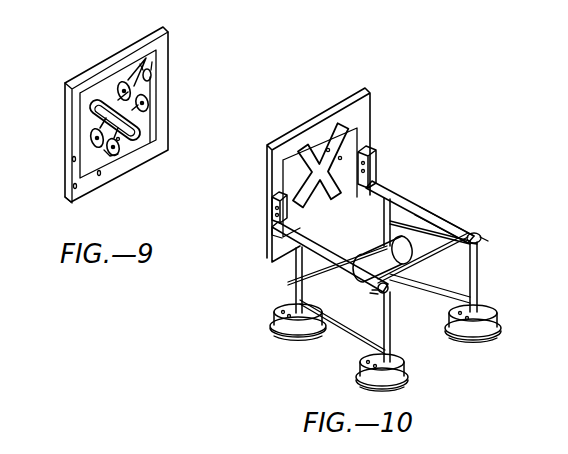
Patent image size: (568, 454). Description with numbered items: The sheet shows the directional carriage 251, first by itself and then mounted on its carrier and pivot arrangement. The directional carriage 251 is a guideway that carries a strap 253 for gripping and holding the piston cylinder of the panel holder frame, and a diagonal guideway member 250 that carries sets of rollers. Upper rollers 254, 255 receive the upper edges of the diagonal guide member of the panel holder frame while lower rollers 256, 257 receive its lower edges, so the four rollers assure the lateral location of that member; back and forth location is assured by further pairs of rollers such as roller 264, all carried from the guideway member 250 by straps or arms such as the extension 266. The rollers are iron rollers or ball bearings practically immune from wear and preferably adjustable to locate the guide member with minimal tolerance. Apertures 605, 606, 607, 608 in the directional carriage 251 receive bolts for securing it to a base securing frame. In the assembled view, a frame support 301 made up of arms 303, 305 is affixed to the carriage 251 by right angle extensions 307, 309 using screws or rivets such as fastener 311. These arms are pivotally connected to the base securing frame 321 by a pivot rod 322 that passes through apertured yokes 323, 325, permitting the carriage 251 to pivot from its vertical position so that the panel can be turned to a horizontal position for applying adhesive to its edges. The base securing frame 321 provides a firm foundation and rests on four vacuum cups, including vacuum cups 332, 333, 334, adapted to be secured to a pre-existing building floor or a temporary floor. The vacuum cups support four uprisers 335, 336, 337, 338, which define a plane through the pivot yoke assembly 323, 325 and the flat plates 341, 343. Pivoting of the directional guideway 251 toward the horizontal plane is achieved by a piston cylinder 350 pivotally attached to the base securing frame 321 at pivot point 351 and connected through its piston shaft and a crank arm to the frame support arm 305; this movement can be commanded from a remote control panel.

In FIG. 9, the directional carriage 251 is at (168, 33).
In FIG. 10, the directional carriage 251 is at (342, 102).
In FIG. 9, the diagonal guideway member 250 is at (138, 115).
In FIG. 10, the diagonal guideway member 250 is at (348, 130).
In FIG. 9, the strap 253 is at (100, 107).
In FIG. 9, the upper roller 254 is at (123, 82).
In FIG. 9, the upper roller 255 is at (147, 98).
In FIG. 9, the lower roller 256 is at (90, 137).
In FIG. 9, the lower roller 257 is at (116, 154).
In FIG. 9, the roller 264 is at (72, 178).
In FIG. 9, the extension 266 is at (150, 73).
In FIG. 9, the aperture 605 is at (75, 188).
In FIG. 9, the aperture 606 is at (118, 139).
In FIG. 9, the aperture 607 is at (100, 176).
In FIG. 9, the aperture 608 is at (72, 160).
In FIG. 10, the frame support 301 is at (440, 213).
In FIG. 10, the arm 303 is at (372, 179).
In FIG. 10, the arm 305 is at (325, 240).
In FIG. 10, the right angle extension 307 is at (375, 152).
In FIG. 10, the right angle extension 309 is at (272, 198).
In FIG. 10, the screw or rivet 311 is at (277, 213).
In FIG. 10, the base securing frame 321 is at (455, 291).
In FIG. 10, the pivot rod 322 is at (480, 233).
In FIG. 10, the apertured yoke 323 is at (478, 245).
In FIG. 10, the apertured yoke 325 is at (389, 291).
In FIG. 10, the vacuum cup 332 is at (480, 342).
In FIG. 10, the vacuum cup 333 is at (410, 388).
In FIG. 10, the vacuum cup 334 is at (293, 342).
In FIG. 10, the upriser 335 is at (402, 222).
In FIG. 10, the upriser 336 is at (478, 288).
In FIG. 10, the upriser 337 is at (388, 333).
In FIG. 10, the upriser 338 is at (295, 297).
In FIG. 10, the flat plate 341 is at (282, 258).
In FIG. 10, the flat plate 343 is at (386, 200).
In FIG. 10, the piston cylinder 350 is at (298, 275).
In FIG. 10, the pivot point 351 is at (413, 258).